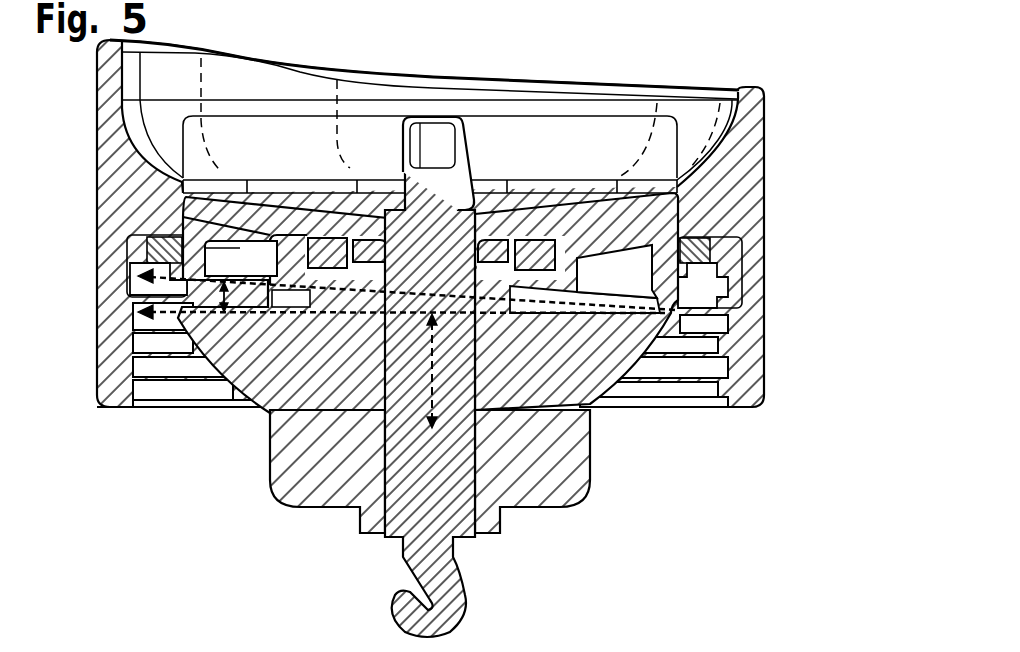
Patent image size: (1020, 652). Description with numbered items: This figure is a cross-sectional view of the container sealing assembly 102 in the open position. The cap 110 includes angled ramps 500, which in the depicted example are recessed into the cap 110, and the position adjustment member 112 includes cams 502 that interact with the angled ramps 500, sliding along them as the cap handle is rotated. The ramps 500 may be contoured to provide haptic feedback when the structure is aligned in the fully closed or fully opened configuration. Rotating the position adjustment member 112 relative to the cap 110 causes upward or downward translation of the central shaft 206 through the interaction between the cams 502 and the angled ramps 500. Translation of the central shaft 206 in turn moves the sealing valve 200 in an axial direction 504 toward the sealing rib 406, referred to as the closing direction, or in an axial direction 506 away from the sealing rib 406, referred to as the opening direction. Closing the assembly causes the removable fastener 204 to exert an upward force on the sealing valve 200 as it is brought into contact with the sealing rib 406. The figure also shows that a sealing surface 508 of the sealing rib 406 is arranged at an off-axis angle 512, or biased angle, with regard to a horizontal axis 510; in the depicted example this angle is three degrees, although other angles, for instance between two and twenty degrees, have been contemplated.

The container sealing assembly 102 is at (444, 338).
The cap 110 is at (768, 206).
The position adjustment member 112 is at (468, 112).
The sealing valve 200 is at (341, 364).
The removable fastener 204 is at (346, 491).
The central shaft 206 is at (452, 501).
The sealing rib 406 is at (127, 263).
The angled ramps 500 is at (335, 252).
The cams 502 is at (260, 268).
The axial direction 504 is at (442, 352).
The axial direction 506 is at (478, 428).
The sealing surface 508 is at (187, 300).
The horizontal axis 510 is at (575, 292).
The off-axis angle 512 is at (235, 292).